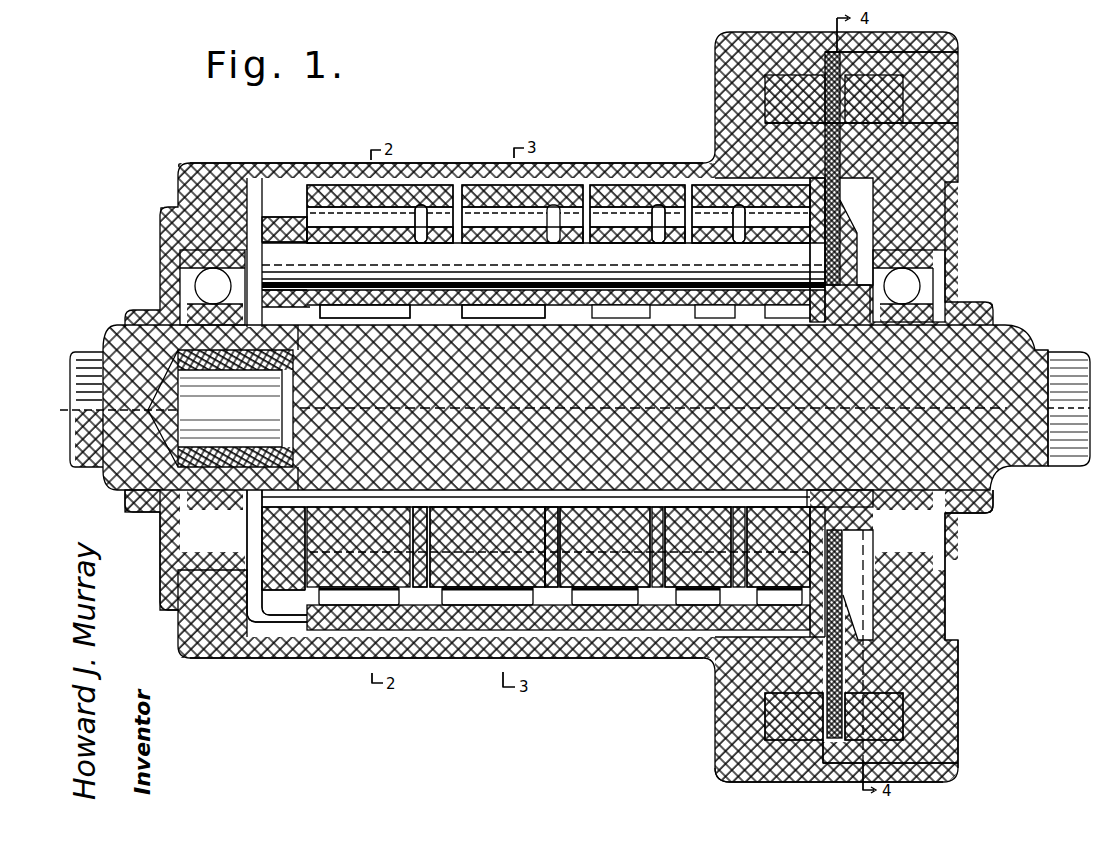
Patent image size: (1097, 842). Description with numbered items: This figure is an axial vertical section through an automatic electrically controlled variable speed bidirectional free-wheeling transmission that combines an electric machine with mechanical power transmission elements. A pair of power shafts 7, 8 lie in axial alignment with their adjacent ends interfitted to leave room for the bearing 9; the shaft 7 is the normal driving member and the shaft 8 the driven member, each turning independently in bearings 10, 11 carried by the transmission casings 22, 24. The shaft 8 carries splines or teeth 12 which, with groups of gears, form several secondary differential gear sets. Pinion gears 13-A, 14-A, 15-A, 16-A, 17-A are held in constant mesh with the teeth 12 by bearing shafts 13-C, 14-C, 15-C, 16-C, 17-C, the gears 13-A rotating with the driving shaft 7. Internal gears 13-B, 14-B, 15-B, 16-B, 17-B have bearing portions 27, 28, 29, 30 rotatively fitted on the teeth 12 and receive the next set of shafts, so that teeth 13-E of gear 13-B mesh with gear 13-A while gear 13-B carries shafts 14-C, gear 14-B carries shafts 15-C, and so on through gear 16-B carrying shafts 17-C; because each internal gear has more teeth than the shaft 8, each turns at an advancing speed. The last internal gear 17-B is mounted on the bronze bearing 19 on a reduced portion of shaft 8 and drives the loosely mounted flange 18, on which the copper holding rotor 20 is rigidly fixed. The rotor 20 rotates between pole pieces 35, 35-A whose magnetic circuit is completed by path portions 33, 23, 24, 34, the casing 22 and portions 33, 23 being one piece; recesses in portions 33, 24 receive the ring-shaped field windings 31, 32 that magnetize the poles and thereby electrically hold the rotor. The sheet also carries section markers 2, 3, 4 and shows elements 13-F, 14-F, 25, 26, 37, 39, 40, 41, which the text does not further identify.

The section line 2- 2 is at (382, 412).
The section line 3- 3 is at (520, 413).
The section line 4- 4 is at (853, 400).
The power shaft 7 is at (122, 488).
The power shaft 8 is at (1038, 458).
The bearing 9 is at (168, 505).
The bearing 10 is at (213, 286).
The bearing 11 is at (905, 284).
The splines or teeth 12 is at (317, 500).
The pinion gear 13-A is at (372, 262).
The internal gear 13-B is at (443, 198).
The bearing shaft 13-C is at (346, 222).
The teeth 13-E is at (398, 228).
The rotor segment block 13-F is at (383, 315).
The pinion gear 14-A is at (500, 215).
The internal gear 14-B is at (530, 262).
The bearing shaft 14-C is at (440, 190).
The rotor segment block 14-F is at (521, 315).
The pinion gear 15-A is at (640, 262).
The internal gear 15-B is at (600, 195).
The bearing shaft 15-C is at (520, 192).
The pinion gear 16-A is at (690, 215).
The internal gear 16-B is at (733, 262).
The bearing shaft 16-C is at (660, 200).
The pinion gear 17-A is at (780, 195).
The internal gear 17-B is at (800, 190).
The bearing shaft 17-C is at (760, 215).
The flange 18 is at (870, 507).
The bronze bearing 19 is at (993, 498).
The rotor 20 is at (843, 577).
The transmission casing 22 is at (636, 648).
The path portion 23 is at (948, 770).
The transmission casing 24 is at (955, 715).
The housing end wall 25 is at (168, 597).
The housing inner wall 26 is at (950, 594).
The bearing portion 27 is at (487, 575).
The bearing portion 28 is at (620, 575).
The bearing portion 29 is at (703, 575).
The bearing portion 30 is at (712, 660).
The field winding 31 is at (790, 725).
The field winding 32 is at (885, 703).
The path portion 33 is at (722, 766).
The path portion 34 is at (880, 753).
The pole piece 35 is at (857, 148).
The pole piece 35-A is at (818, 148).
The stator end block 37 is at (338, 580).
The rotor end block 39 is at (272, 222).
The spacer 40 is at (419, 575).
The spacer 41 is at (554, 585).